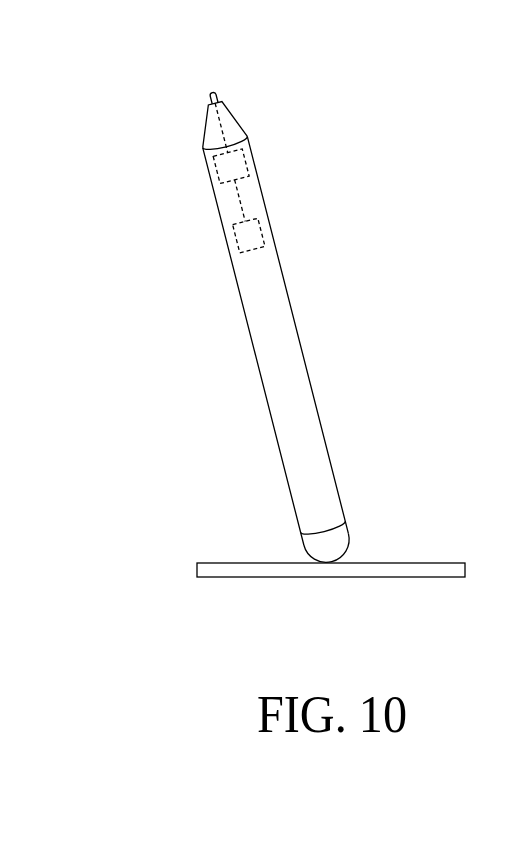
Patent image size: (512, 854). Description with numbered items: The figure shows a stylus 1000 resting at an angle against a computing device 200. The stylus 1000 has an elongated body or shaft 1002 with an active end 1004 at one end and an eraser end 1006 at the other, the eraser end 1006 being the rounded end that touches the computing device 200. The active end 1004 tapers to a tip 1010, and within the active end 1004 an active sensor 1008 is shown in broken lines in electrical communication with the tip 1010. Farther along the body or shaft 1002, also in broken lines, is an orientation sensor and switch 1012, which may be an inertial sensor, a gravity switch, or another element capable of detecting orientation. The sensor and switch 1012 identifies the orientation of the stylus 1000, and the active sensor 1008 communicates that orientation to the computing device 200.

The stylus 1000 is at (320, 219).
The body or shaft 1002 is at (292, 316).
The active end 1004 is at (238, 134).
The eraser end 1006 is at (345, 548).
The active sensor 1008 is at (245, 168).
The tip 1010 is at (215, 96).
The orientation sensor and switch 1012 is at (234, 231).
The computing device 200 is at (438, 563).